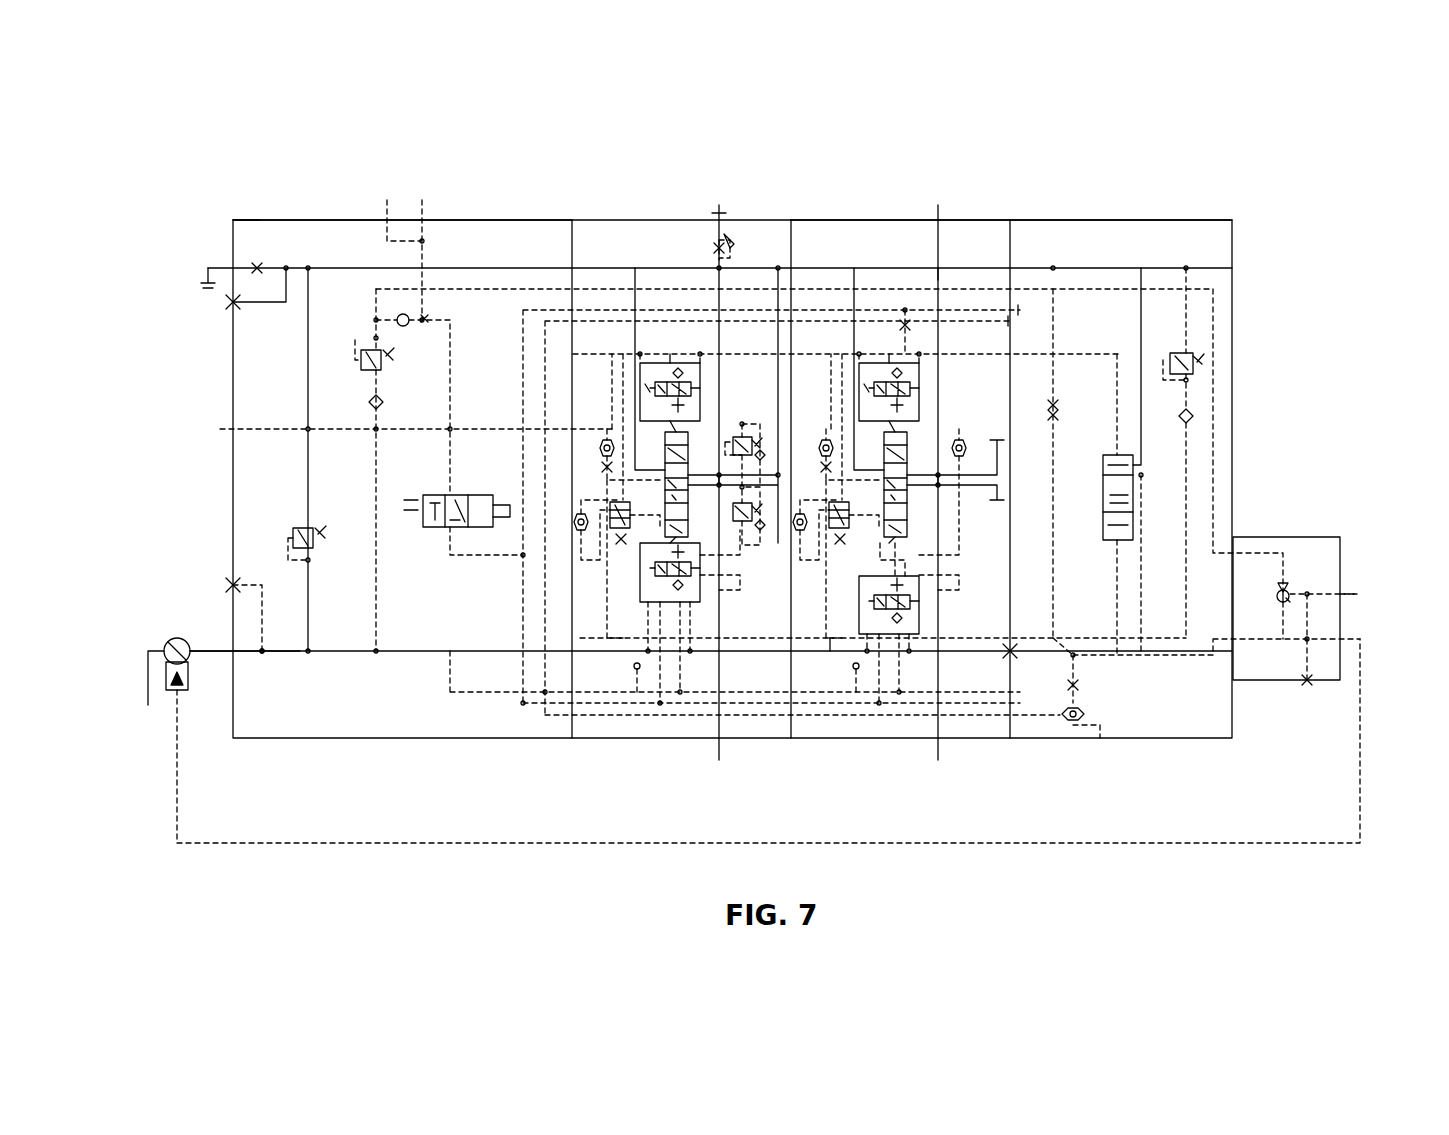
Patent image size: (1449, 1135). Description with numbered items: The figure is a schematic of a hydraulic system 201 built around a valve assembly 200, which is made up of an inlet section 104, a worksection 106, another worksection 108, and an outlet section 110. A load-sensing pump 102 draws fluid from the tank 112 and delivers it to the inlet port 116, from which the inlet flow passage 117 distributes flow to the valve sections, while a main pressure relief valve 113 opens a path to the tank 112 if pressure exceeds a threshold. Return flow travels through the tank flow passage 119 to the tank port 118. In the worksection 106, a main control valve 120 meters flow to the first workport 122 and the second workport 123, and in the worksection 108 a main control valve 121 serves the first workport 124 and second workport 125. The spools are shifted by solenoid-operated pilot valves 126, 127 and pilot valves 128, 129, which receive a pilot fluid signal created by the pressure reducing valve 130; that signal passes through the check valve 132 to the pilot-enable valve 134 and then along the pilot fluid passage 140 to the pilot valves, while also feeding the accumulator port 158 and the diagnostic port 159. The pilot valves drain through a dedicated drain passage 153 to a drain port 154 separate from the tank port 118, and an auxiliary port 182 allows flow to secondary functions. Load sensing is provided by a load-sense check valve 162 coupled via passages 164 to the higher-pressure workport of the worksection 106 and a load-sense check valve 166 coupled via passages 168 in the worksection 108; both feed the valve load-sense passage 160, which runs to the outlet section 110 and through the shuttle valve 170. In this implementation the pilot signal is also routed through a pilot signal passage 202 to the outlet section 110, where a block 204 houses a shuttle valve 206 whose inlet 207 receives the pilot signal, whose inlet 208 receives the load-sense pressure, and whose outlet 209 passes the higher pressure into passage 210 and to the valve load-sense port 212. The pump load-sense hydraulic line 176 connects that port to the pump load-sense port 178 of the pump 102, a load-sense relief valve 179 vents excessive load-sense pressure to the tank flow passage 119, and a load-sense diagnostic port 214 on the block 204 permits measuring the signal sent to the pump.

The pump 102 is at (168, 640).
The inlet section 104 is at (470, 195).
The worksection 106 is at (660, 195).
The worksection 108 is at (867, 195).
The outlet section 110 is at (1078, 195).
The tank 112 is at (208, 290).
The main pressure relief valve 113 is at (290, 538).
The inlet port 116 is at (228, 645).
The inlet flow passage 117 is at (216, 652).
The tank port 118 is at (230, 262).
The tank flow passage 119 is at (330, 268).
The main control valve 120 is at (700, 430).
The main control valve 121 is at (920, 440).
The first workport 122 is at (716, 740).
The second workport 123 is at (724, 205).
The first workport 124 is at (942, 740).
The second workport 125 is at (944, 207).
The pilot valve 126 is at (660, 602).
The pilot valve 127 is at (668, 363).
The pilot valve 128 is at (880, 634).
The pilot valve 129 is at (887, 363).
The pressure reducing valve 130 is at (355, 350).
The check valve 132 is at (400, 313).
The pilot-enable valve 134 is at (420, 530).
The pilot fluid passage 140 is at (585, 315).
The drain passage 153 is at (540, 310).
The drain port 154 is at (522, 760).
The accumulator port 158 is at (420, 197).
The diagnostic port 159 is at (385, 197).
The valve load-sense passage 160 is at (790, 740).
The load-sense check valve 162 is at (637, 663).
The passages 164 is at (637, 670).
The load-sense check valve 166 is at (856, 663).
The passages 168 is at (856, 670).
The shuttle valve 170 is at (1072, 722).
The pump load-sense hydraulic line 176 is at (308, 843).
The pump load-sense port 178 is at (182, 695).
The load-sense relief valve 179 is at (1183, 350).
The auxiliary port 182 is at (225, 580).
The valve assembly 200 is at (558, 216).
The hydraulic system 201 is at (240, 158).
The pilot signal passage 202 is at (466, 289).
The block 204 is at (1258, 533).
The shuttle valve 206 is at (1286, 586).
The inlet 207 is at (1275, 582).
The inlet 208 is at (1278, 608).
The outlet 209 is at (1292, 603).
The passage 210 is at (1292, 590).
The valve load-sense port 212 is at (1362, 636).
The load-sense diagnostic port 214 is at (1358, 592).